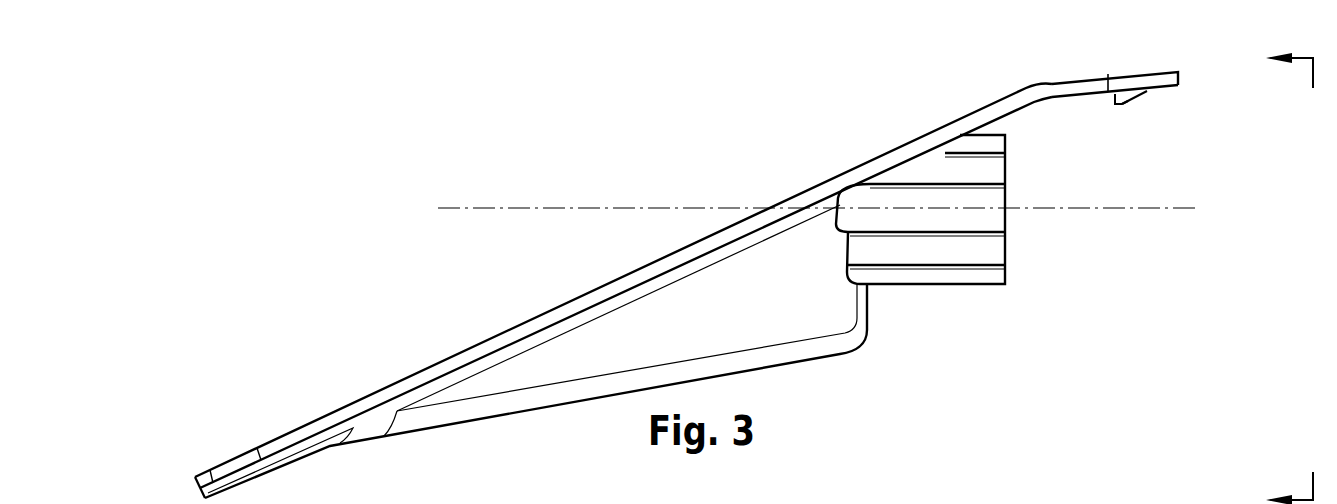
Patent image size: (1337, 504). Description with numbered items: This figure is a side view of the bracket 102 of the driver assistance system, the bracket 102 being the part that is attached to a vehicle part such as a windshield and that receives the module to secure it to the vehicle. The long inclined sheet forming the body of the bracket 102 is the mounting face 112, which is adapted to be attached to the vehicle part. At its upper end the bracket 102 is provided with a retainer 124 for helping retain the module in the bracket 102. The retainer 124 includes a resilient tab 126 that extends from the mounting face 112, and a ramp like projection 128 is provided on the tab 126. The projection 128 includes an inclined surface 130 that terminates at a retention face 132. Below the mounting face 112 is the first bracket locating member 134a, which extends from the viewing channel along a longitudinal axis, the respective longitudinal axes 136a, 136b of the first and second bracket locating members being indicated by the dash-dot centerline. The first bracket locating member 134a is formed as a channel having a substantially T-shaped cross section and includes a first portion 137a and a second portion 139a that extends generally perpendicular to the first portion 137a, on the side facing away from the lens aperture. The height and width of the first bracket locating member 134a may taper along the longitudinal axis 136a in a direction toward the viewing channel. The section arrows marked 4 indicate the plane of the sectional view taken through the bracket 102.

The bracket 102 is at (445, 240).
The mounting face 112 is at (1000, 81).
The retainer 124 is at (1097, 47).
The resilient tab 126 is at (1092, 98).
The ramp like projection 128 is at (1157, 114).
The inclined surface 130 is at (1130, 105).
The retention face 132 is at (1114, 106).
The first bracket locating member 134a is at (903, 150).
The longitudinal axis 136a is at (565, 187).
The longitudinal axis 136b is at (627, 348).
The first portion 137a is at (985, 275).
The second portion 139a is at (852, 222).
The section line 4- 4 is at (1282, 277).